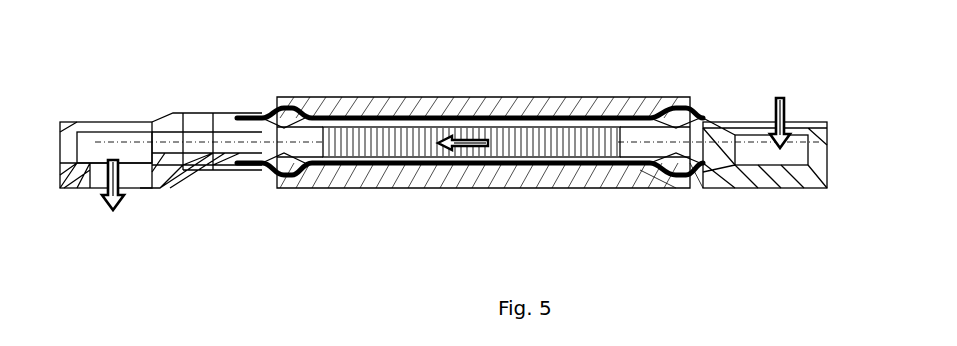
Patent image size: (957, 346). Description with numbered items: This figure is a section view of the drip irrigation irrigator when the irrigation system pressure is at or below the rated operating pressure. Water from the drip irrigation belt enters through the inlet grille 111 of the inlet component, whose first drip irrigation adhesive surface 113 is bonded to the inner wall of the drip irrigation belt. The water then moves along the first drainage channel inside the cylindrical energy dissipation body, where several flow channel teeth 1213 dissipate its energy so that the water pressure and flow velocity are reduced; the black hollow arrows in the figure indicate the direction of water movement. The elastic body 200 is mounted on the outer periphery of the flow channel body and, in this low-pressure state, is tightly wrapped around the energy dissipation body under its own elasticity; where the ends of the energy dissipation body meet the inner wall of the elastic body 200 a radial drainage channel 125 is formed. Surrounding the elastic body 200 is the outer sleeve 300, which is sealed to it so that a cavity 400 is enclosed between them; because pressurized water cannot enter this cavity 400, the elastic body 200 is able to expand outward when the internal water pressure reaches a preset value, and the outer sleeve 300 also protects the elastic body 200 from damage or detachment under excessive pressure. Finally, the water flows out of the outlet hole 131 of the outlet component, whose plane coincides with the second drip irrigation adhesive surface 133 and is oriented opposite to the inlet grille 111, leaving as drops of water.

The inlet grille 111 is at (752, 128).
The first drip irrigation adhesive surface 113 is at (791, 188).
The radial drainage channel 125 is at (630, 158).
The outlet hole 131 is at (127, 175).
The second drip irrigation adhesive surface 133 is at (82, 188).
The elastic body 200 is at (618, 115).
The outer sleeve 300 is at (443, 97).
The cavity 400 is at (352, 97).
The flow channel teeth 1213 is at (508, 140).